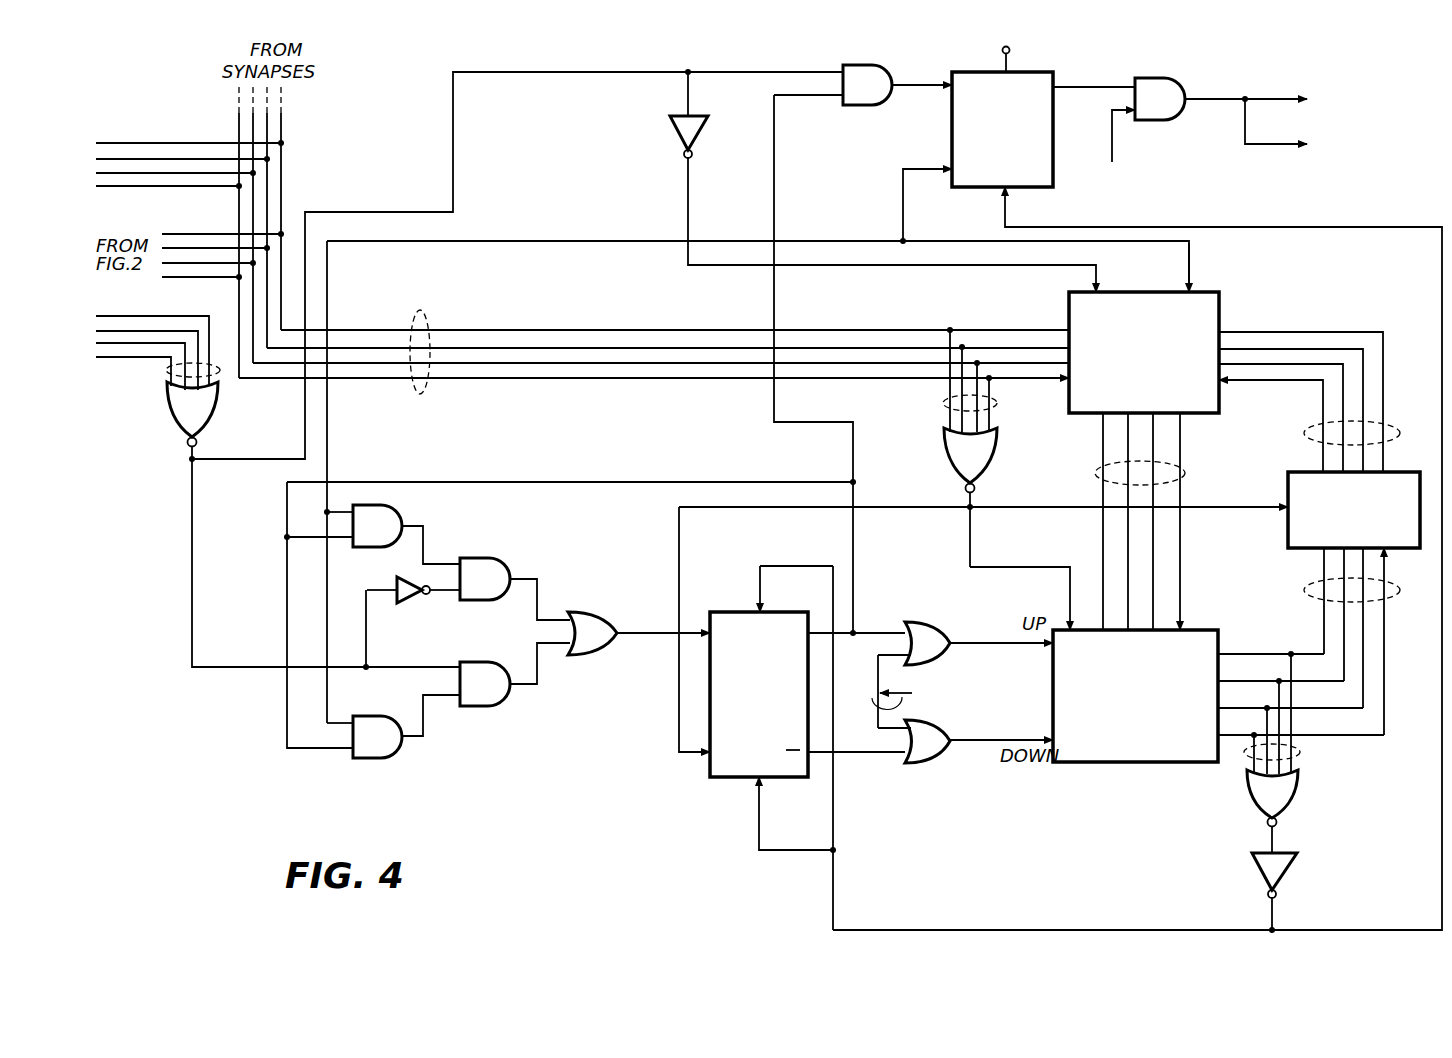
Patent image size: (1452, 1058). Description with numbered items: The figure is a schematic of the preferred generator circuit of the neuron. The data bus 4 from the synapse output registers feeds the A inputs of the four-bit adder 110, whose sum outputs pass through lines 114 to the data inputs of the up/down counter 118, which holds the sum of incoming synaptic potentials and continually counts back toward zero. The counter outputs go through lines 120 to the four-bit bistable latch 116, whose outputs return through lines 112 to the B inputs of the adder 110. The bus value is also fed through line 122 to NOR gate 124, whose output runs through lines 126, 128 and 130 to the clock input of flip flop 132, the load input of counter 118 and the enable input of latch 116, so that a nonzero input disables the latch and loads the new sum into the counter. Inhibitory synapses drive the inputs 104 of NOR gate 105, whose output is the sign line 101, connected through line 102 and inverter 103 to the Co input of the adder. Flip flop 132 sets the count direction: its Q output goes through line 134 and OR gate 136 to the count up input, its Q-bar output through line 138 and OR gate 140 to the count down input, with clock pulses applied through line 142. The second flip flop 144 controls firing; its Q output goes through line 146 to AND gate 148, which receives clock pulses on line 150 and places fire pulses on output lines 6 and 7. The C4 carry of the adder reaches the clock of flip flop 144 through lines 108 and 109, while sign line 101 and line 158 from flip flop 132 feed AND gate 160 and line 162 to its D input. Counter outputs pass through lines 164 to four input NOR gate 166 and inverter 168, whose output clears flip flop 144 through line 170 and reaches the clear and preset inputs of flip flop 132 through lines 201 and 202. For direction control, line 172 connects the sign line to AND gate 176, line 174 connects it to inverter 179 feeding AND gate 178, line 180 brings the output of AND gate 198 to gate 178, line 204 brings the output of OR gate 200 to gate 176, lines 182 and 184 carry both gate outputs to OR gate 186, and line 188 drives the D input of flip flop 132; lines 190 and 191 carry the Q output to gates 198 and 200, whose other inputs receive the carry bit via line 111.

The data bus 4 is at (418, 322).
The output line 6 is at (1270, 98).
The output line 7 is at (1268, 145).
The sign line 101 is at (622, 73).
The line 102 is at (691, 98).
The inverter 103 is at (692, 148).
The inputs 104 is at (168, 368).
The NOR gate 105 is at (172, 422).
The line 108 is at (1192, 263).
The line 109 is at (905, 220).
The four-bit adder 110 is at (1222, 313).
The line 111 is at (335, 509).
The lines 112 is at (1393, 428).
The lines 114 is at (1187, 472).
The four-bit bistable latch 116 is at (1287, 527).
The up/down counter 118 is at (1218, 630).
The lines 120 is at (1312, 585).
The line 122 is at (998, 403).
The NOR gate 124 is at (998, 458).
The line 126 is at (935, 508).
The line 128 is at (1023, 567).
The line 130 is at (1029, 510).
The flip flop 132 is at (738, 605).
The line 134 is at (870, 633).
The OR gate 136 is at (928, 623).
The line 138 is at (845, 753).
The OR gate 140 is at (932, 767).
The line 142 is at (897, 691).
The second flip flop 144 is at (965, 63).
The line 146 is at (1088, 83).
The AND gate 148 is at (1172, 77).
The line 150 is at (1113, 138).
The line 158 is at (773, 413).
The AND gate 160 is at (855, 108).
The line 162 is at (927, 88).
The lines 164 is at (1300, 752).
The four input NOR gate 166 is at (1295, 800).
The inverter gate 168 is at (1287, 875).
The line 170 is at (1295, 227).
The line 172 is at (377, 667).
The line 174 is at (382, 588).
The AND gate 176 is at (497, 705).
The AND gate 178 is at (492, 557).
The inverter 179 is at (419, 603).
The line 180 is at (425, 532).
The line 182 is at (538, 678).
The line 184 is at (537, 580).
The OR gate 186 is at (580, 612).
The line 188 is at (663, 630).
The line 190 is at (607, 482).
The line 191 is at (302, 538).
The AND gate 198 is at (395, 507).
The OR gate 200 is at (380, 760).
The line 201 is at (1045, 928).
The line 202 is at (835, 825).
The line 204 is at (423, 723).